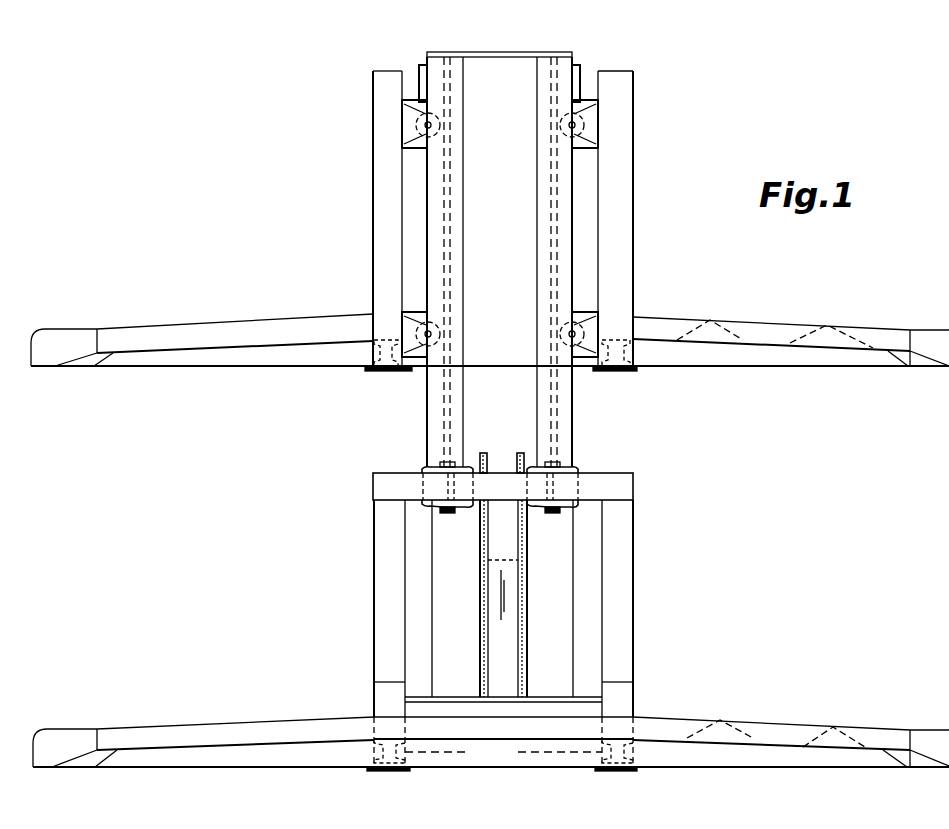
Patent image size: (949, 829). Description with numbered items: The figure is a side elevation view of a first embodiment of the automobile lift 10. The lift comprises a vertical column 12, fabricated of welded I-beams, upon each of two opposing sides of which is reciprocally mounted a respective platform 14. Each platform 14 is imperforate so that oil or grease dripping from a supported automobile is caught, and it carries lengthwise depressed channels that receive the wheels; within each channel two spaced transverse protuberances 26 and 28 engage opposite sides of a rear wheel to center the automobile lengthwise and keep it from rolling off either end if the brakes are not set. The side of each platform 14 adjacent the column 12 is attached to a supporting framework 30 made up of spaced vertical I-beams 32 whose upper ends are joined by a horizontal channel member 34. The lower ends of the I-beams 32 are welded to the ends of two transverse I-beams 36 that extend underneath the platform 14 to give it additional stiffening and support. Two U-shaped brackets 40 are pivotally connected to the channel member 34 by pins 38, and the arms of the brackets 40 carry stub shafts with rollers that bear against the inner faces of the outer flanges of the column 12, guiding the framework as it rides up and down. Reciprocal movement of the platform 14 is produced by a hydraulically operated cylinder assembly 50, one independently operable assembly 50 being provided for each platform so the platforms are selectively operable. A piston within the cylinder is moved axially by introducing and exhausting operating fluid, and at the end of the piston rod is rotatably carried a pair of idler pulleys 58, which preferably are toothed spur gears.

The automobile lift 10 is at (672, 275).
The vertical column 12 is at (588, 420).
The platform 14 is at (902, 328).
The protuberance 26 is at (743, 333).
The protuberance 28 is at (845, 332).
The supporting framework 30 is at (636, 185).
The I-beam 32 is at (385, 218).
The horizontal channel member 34 is at (412, 72).
The transverse I-beam 36 is at (377, 372).
The pin 38 is at (452, 513).
The U-shaped bracket 40 is at (425, 467).
The hydraulically operated cylinder assembly 50 is at (507, 633).
The idler pulley 58 is at (519, 455).